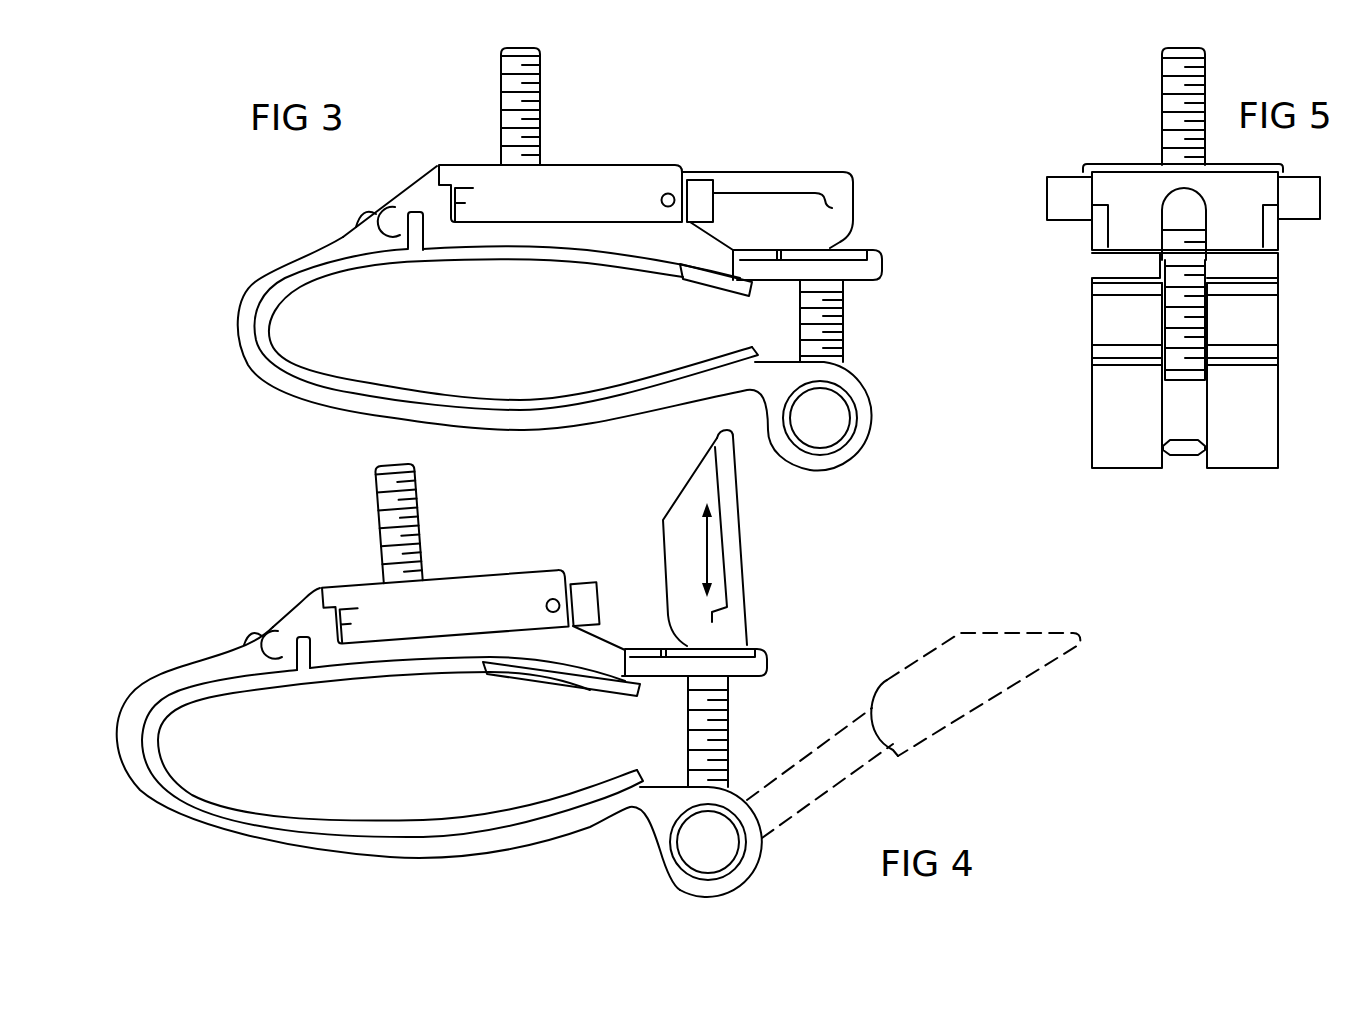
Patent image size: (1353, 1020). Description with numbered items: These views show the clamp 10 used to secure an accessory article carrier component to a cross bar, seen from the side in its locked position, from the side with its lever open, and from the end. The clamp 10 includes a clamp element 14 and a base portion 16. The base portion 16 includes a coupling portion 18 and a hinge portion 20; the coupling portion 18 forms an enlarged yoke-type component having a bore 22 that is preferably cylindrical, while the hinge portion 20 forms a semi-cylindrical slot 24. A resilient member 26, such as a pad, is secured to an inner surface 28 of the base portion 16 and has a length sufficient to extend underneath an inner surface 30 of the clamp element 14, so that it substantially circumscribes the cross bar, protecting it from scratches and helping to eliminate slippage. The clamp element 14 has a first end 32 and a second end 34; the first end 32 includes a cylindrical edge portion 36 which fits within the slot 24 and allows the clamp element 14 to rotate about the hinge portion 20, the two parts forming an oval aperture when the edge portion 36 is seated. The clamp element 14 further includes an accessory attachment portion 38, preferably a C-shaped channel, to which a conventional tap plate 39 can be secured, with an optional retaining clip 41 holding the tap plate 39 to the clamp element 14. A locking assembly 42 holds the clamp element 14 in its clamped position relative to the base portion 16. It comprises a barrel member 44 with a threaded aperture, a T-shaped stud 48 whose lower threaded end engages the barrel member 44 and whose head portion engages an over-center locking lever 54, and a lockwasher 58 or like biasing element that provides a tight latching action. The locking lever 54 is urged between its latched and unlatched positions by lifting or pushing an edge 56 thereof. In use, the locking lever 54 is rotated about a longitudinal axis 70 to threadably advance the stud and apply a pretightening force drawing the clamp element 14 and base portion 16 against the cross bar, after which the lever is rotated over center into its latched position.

In FIG. 3, the clamp 10 is at (222, 250).
In FIG. 4, the clamp 10 is at (150, 654).
In FIG. 5, the clamp 10 is at (1068, 111).
In FIG. 3, the clamp element 14 is at (514, 252).
In FIG. 4, the clamp element 14 is at (296, 587).
In FIG. 5, the clamp element 14 is at (1274, 268).
In FIG. 3, the base portion 16 is at (247, 384).
In FIG. 4, the base portion 16 is at (398, 758).
In FIG. 5, the base portion 16 is at (1076, 405).
In FIG. 3, the coupling portion 18 is at (845, 457).
In FIG. 4, the coupling portion 18 is at (701, 842).
In FIG. 5, the coupling portion 18 is at (1107, 430).
In FIG. 3, the hinge portion 20 is at (363, 218).
In FIG. 4, the hinge portion 20 is at (253, 638).
In FIG. 3, the bore 22 is at (852, 420).
In FIG. 4, the bore 22 is at (735, 854).
In FIG. 3, the semi-cylindrical slot 24 is at (373, 233).
In FIG. 4, the semi-cylindrical slot 24 is at (273, 657).
In FIG. 3, the resilient member 26 is at (627, 390).
In FIG. 4, the resilient member 26 is at (440, 823).
In FIG. 3, the inner surface 28 is at (527, 403).
In FIG. 4, the inner surface 28 is at (483, 823).
In FIG. 3, the inner surface 30 is at (683, 266).
In FIG. 4, the inner surface 30 is at (483, 662).
In FIG. 3, the first end 32 is at (420, 193).
In FIG. 4, the first end 32 is at (285, 620).
In FIG. 3, the second end 34 is at (872, 267).
In FIG. 4, the second end 34 is at (760, 658).
In FIG. 3, the cylindrical edge portion 36 is at (387, 213).
In FIG. 4, the cylindrical edge portion 36 is at (303, 653).
In FIG. 3, the accessory attachment portion 38 is at (497, 237).
In FIG. 3, the tap plate 39 is at (557, 106).
In FIG. 4, the tap plate 39 is at (399, 524).
In FIG. 5, the tap plate 39 is at (1168, 115).
In FIG. 3, the retaining clip 41 is at (576, 167).
In FIG. 4, the retaining clip 41 is at (461, 605).
In FIG. 5, the retaining clip 41 is at (1060, 197).
In FIG. 3, the locking assembly 42 is at (861, 328).
In FIG. 4, the locking assembly 42 is at (744, 747).
In FIG. 3, the barrel member 44 is at (807, 427).
In FIG. 4, the barrel member 44 is at (683, 842).
In FIG. 5, the barrel member 44 is at (1177, 427).
In FIG. 3, the T-shaped stud 48 is at (808, 312).
In FIG. 4, the T-shaped stud 48 is at (690, 715).
In FIG. 5, the T-shaped stud 48 is at (1200, 325).
In FIG. 3, the over-center locking lever 54 is at (794, 162).
In FIG. 4, the over-center locking lever 54 is at (757, 563).
In FIG. 4, the edge 56 is at (710, 450).
In FIG. 3, the lockwasher 58 is at (848, 252).
In FIG. 4, the lockwasher 58 is at (673, 650).
In FIG. 4, the longitudinal axis 70 is at (703, 547).